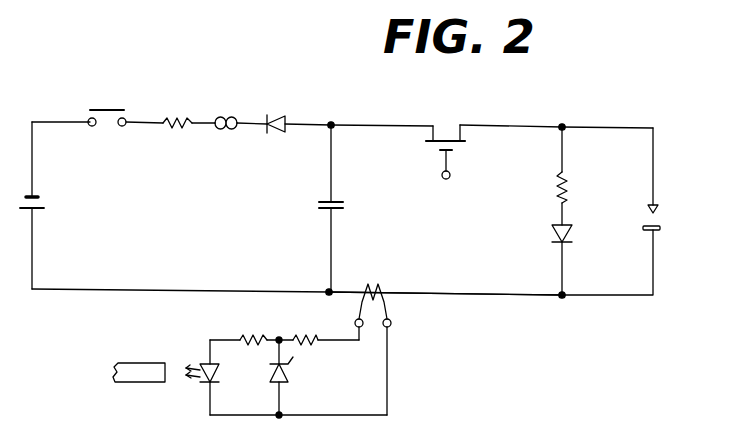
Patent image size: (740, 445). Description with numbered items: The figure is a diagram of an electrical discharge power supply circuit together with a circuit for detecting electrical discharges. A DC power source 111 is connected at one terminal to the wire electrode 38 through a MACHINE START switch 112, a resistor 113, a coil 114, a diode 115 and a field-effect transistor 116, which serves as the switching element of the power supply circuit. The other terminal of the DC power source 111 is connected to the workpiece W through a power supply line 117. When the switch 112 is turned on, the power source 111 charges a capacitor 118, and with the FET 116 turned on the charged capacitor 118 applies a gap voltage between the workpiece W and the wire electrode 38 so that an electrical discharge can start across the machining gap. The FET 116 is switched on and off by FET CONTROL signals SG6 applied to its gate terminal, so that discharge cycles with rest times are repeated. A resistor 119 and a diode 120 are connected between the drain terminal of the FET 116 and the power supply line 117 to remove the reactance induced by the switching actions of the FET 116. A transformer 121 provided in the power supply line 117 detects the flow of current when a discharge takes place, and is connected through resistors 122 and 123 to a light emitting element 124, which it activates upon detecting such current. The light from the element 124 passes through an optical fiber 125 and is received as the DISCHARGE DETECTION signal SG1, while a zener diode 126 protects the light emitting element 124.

The DC power source 111 is at (40, 204).
The MACHINE START switch 112 is at (104, 108).
The resistor 113 is at (170, 118).
The coil 114 is at (232, 116).
The diode 115 is at (273, 115).
The field-effect transistor 116 is at (458, 143).
The power supply line 117 is at (478, 290).
The capacitor 118 is at (335, 196).
The resistor 119 is at (567, 182).
The diode 120 is at (568, 235).
The transformer 121 is at (382, 284).
The resistor 122 is at (313, 335).
The resistor 123 is at (250, 335).
The light emitting element 124 is at (216, 370).
The optical fiber 125 is at (143, 385).
The zener diode 126 is at (287, 374).
The wire electrode 38 is at (660, 206).
The workpiece W is at (661, 230).
The FET CONTROL signal SG6 is at (452, 197).
The DISCHARGE DETECTION signal SG1 is at (189, 352).